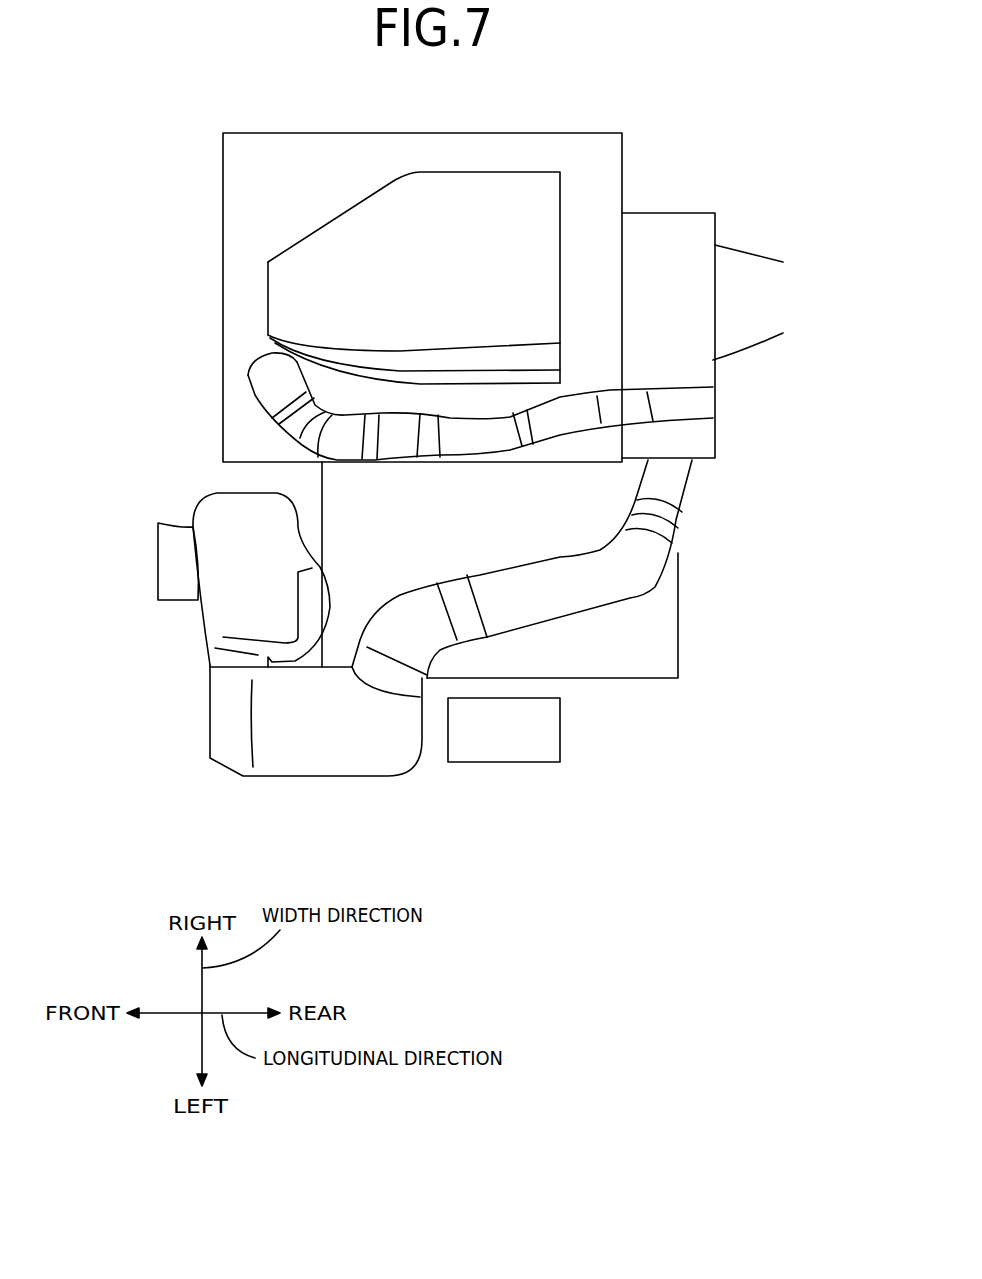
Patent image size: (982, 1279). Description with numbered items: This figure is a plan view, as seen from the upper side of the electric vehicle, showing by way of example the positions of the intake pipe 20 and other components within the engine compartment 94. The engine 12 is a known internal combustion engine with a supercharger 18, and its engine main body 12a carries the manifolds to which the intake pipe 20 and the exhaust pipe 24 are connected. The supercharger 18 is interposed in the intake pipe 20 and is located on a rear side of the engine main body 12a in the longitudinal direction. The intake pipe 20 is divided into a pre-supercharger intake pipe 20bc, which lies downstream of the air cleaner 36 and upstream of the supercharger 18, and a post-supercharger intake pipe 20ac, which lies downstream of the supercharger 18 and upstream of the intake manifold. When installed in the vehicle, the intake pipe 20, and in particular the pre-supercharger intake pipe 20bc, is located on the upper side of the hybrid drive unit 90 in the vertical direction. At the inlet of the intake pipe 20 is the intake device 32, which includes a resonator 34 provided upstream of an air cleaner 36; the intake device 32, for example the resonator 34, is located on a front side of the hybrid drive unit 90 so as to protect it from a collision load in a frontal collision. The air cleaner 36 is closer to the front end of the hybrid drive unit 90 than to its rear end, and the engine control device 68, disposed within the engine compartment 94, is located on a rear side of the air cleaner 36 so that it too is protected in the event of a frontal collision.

The engine compartment 94 is at (146, 152).
The engine 12 is at (535, 118).
The engine main body 12a is at (255, 205).
The supercharger 18 is at (642, 222).
The exhaust pipe 24 is at (730, 340).
The intake pipe 20 is at (781, 465).
The post-supercharger intake pipe 20ac is at (707, 405).
The pre-supercharger intake pipe 20bc is at (640, 558).
The hybrid drive unit 90 is at (662, 648).
The engine control device 68 is at (545, 730).
The intake device 32 is at (145, 652).
The resonator 34 is at (230, 597).
The air cleaner 36 is at (300, 743).